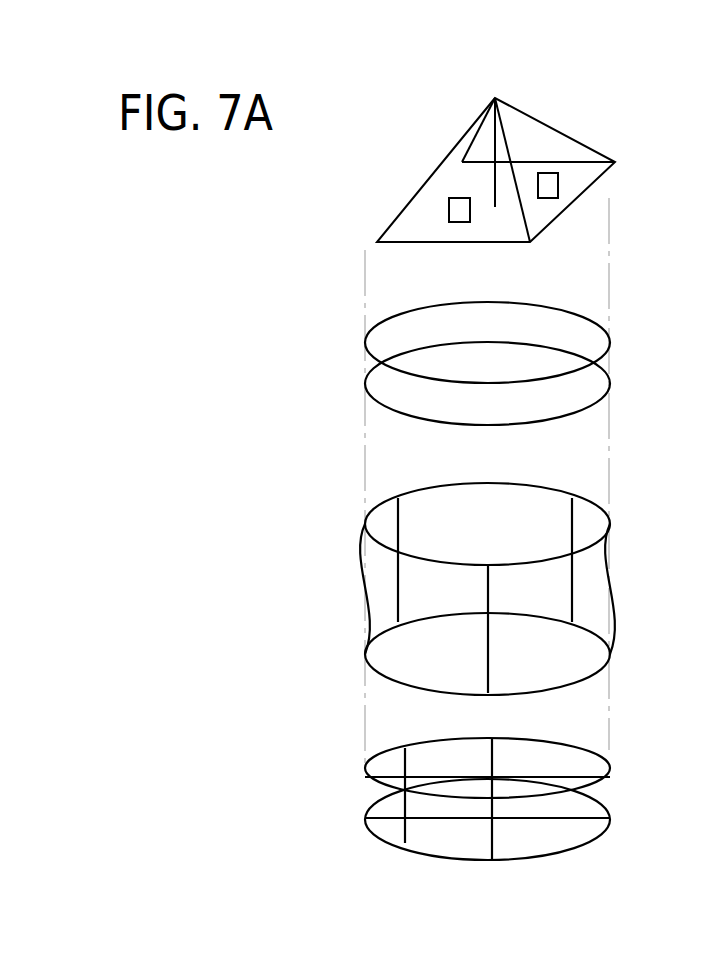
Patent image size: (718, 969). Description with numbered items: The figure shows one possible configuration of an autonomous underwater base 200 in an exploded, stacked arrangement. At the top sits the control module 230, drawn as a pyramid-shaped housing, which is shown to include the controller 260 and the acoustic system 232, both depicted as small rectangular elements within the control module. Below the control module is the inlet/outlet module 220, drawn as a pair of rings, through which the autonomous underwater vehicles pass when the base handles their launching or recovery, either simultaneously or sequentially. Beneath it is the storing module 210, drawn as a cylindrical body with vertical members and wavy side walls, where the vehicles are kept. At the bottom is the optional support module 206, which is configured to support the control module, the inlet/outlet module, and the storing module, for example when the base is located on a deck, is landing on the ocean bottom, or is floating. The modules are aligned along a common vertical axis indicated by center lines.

The autonomous base 200 is at (564, 88).
The control module 230 is at (418, 165).
The acoustic system 232 is at (555, 173).
The controller 260 is at (449, 210).
The inlet/outlet module 220 is at (350, 344).
The storing module 210 is at (350, 524).
The support module 206 is at (350, 802).